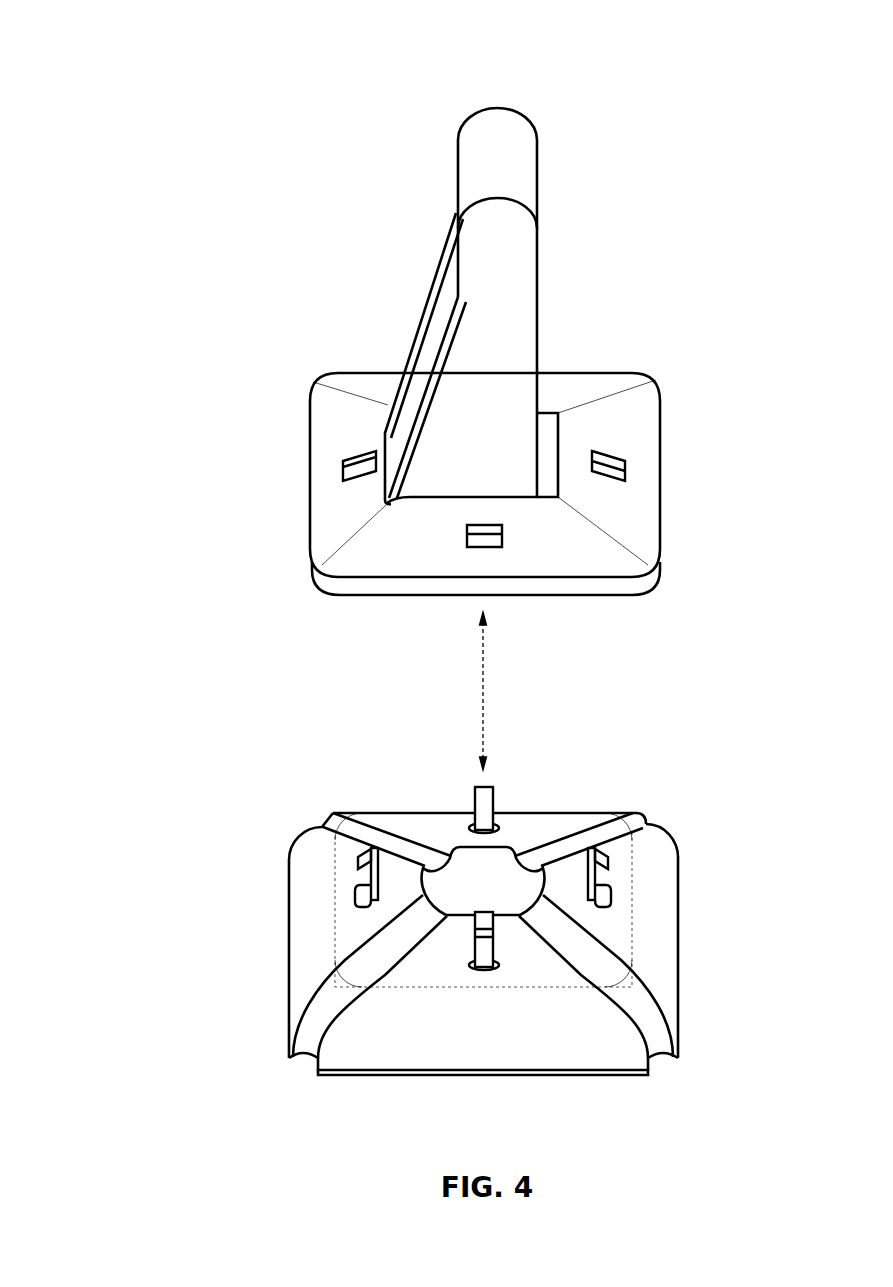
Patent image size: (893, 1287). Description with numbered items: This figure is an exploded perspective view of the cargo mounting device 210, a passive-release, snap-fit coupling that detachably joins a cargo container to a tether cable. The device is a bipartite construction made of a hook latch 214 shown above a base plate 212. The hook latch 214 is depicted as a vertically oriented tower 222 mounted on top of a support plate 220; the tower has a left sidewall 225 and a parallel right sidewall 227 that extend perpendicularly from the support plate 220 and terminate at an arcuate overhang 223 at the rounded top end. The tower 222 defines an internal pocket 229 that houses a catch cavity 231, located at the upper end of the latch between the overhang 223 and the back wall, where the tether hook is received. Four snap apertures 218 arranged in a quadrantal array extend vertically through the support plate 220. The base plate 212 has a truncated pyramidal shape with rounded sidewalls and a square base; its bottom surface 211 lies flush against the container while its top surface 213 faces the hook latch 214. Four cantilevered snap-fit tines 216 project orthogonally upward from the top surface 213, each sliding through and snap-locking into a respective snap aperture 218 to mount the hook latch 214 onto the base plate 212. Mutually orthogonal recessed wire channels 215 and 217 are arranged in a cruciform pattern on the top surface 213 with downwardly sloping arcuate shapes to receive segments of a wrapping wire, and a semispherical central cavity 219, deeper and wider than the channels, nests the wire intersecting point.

The cargo mounting device 210 is at (190, 76).
The hook latch 214 is at (343, 173).
The arcuate overhang 223 is at (481, 133).
The hook latch tower 222 is at (538, 245).
The right sidewall 227 is at (502, 303).
The left sidewall 225 is at (428, 292).
The internal pocket 229 is at (412, 337).
The catch cavity 231 is at (387, 428).
The snap apertures 218 is at (354, 452).
The support plate 220 is at (640, 405).
The base plate 212 is at (268, 832).
The second wire channel 217 is at (408, 823).
The top surface 213 is at (410, 820).
The snap-fit tines 216 is at (474, 800).
The central cavity 219 is at (504, 868).
The first wire channel 215 is at (320, 1010).
The bottom surface 211 is at (378, 1077).